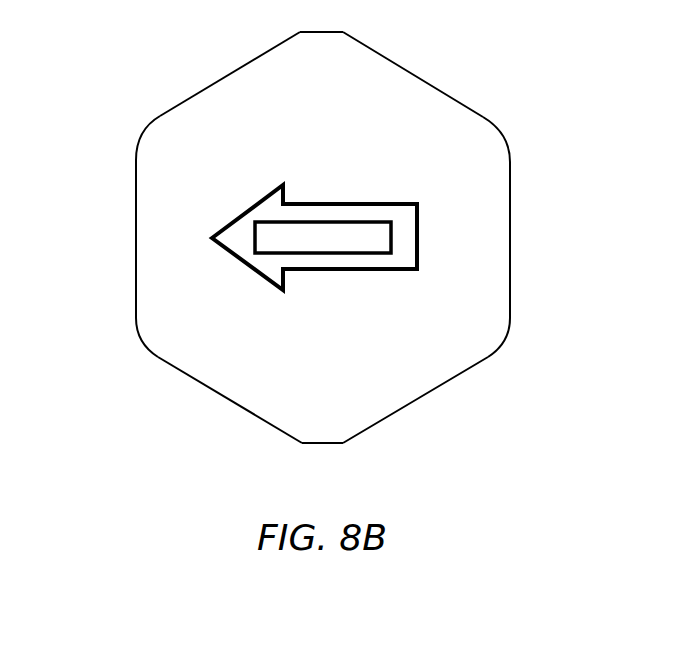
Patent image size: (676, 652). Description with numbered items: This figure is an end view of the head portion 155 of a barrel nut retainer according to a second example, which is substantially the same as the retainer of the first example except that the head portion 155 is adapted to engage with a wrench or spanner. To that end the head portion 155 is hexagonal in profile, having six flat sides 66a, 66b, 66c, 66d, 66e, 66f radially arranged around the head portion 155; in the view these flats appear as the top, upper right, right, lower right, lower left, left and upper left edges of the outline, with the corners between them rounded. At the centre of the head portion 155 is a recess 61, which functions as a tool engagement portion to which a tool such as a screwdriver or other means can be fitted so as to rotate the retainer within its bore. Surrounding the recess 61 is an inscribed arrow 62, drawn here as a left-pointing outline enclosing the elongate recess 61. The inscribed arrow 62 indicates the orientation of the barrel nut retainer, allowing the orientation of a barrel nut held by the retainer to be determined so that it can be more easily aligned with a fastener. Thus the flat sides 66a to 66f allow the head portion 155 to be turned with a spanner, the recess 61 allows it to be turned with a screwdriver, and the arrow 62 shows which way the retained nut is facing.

The head portion 155 is at (168, 310).
The flat side 66a is at (440, 87).
The flat side 66b is at (511, 232).
The flat side 66c is at (410, 408).
The flat side 66d is at (218, 398).
The flat side 66e is at (133, 226).
The flat side 66f is at (222, 77).
The inscribed arrow 62 is at (217, 233).
The recess 61 is at (370, 239).